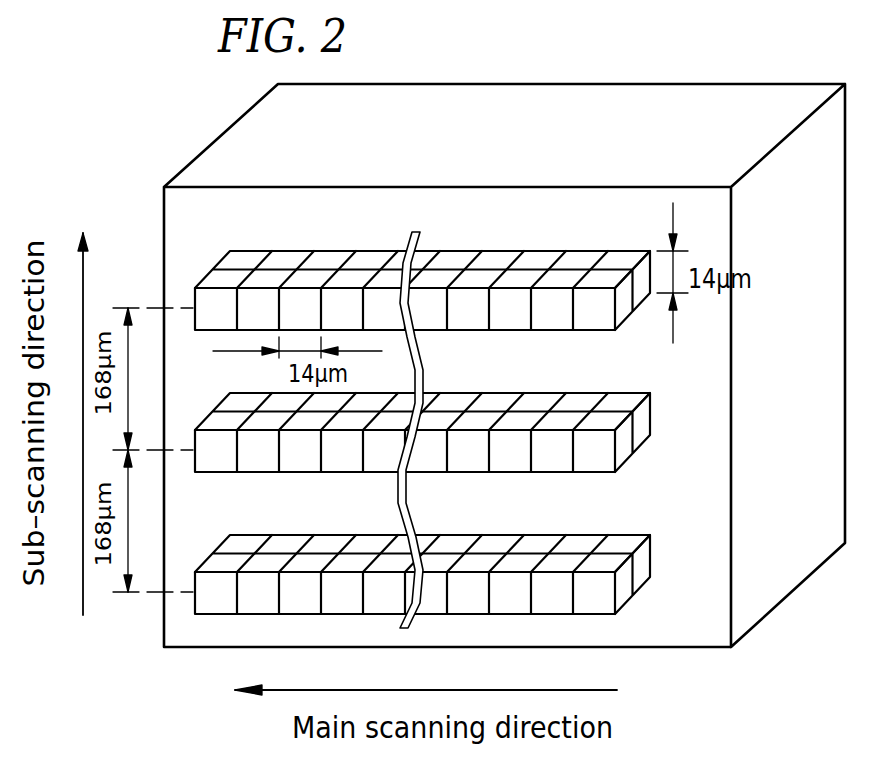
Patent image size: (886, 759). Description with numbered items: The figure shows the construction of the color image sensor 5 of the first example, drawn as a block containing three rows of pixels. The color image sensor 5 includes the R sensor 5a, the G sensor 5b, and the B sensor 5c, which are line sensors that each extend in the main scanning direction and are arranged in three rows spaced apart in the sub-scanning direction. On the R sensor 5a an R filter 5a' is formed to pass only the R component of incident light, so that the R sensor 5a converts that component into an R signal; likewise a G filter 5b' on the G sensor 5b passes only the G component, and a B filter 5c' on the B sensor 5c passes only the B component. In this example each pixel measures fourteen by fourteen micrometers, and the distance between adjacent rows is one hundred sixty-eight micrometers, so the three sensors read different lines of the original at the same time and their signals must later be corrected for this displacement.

The color image sensor 5 is at (760, 187).
The R sensor 5a is at (428, 288).
The R filter 5a' is at (428, 331).
The G sensor 5b is at (453, 452).
The G filter 5b' is at (440, 472).
The B sensor 5c is at (450, 586).
The B filter 5c' is at (436, 608).